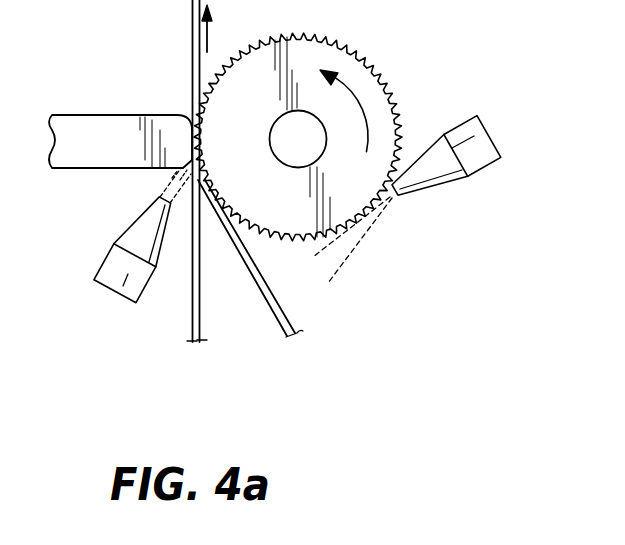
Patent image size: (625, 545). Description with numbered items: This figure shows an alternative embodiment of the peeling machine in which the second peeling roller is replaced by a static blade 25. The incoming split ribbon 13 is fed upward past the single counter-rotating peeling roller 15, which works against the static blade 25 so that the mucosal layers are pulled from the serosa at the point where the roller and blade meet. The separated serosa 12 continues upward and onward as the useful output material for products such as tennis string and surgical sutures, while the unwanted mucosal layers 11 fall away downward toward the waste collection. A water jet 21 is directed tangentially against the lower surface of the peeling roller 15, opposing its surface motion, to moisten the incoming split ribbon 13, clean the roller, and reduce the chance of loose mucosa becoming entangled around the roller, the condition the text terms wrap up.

The mucosal layers 11 is at (287, 312).
The serosa 12 is at (192, 53).
The split ribbon 13 is at (193, 308).
The peeling roller 15 is at (377, 100).
The water jet 21 is at (496, 160).
The static blade 25 is at (100, 127).